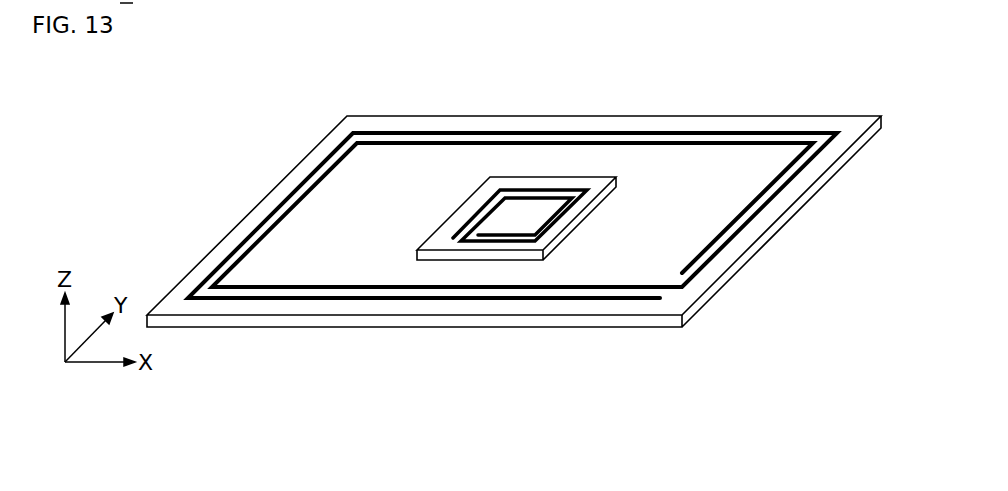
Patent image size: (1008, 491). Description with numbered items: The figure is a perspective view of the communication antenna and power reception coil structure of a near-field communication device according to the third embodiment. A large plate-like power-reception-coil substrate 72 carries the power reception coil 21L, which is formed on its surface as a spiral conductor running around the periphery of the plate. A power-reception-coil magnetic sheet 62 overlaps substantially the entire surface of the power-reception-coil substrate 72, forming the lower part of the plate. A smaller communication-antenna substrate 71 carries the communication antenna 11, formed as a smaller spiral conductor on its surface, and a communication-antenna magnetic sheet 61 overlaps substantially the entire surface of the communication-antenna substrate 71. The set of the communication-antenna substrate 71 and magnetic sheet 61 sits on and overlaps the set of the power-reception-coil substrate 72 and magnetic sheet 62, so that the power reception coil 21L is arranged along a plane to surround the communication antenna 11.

The communication antenna 11 is at (533, 193).
The communication-antenna substrate 71 is at (523, 153).
The communication-antenna magnetic sheet 61 is at (607, 195).
The power reception coil 21L is at (725, 143).
The power-reception-coil substrate 72 is at (850, 130).
The power-reception-coil magnetic sheet 62 is at (520, 187).